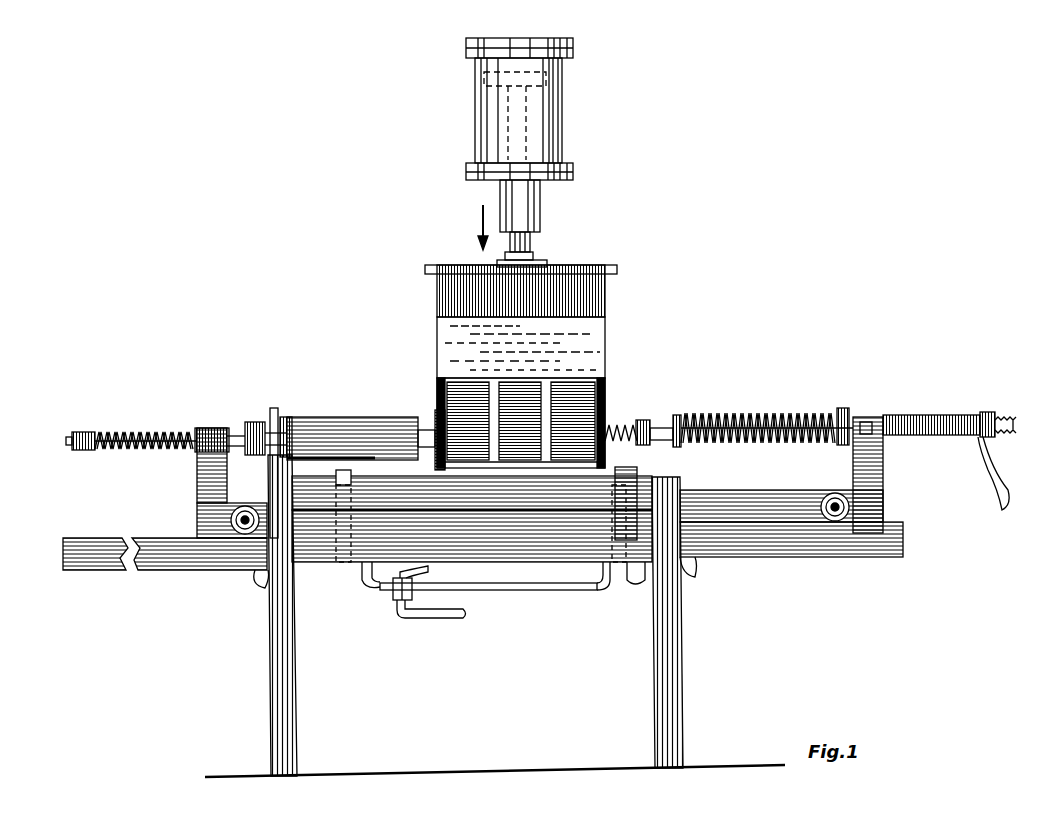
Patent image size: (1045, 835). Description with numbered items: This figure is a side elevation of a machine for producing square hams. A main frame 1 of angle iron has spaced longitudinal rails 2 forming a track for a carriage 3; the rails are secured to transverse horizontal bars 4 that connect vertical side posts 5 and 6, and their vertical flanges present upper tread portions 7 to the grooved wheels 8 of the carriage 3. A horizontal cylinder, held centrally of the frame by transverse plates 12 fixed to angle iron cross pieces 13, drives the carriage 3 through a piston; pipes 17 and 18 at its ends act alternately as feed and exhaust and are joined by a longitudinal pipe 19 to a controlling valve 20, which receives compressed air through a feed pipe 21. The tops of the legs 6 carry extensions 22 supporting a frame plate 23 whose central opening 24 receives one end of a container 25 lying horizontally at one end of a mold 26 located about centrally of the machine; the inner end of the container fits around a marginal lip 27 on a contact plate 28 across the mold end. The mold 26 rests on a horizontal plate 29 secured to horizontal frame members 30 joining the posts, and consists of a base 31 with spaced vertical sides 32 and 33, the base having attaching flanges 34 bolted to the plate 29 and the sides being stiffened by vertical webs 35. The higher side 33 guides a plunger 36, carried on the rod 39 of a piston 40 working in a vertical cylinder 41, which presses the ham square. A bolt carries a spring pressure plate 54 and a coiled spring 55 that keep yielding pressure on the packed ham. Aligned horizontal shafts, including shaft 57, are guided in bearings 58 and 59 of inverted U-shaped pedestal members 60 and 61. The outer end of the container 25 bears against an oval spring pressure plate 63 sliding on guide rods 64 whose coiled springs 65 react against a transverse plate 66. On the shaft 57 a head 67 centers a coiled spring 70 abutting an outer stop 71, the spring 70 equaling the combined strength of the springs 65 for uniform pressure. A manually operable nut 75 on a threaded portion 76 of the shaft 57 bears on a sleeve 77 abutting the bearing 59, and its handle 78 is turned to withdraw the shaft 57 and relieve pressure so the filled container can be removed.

The main frame 1 is at (700, 668).
The longitudinal rails 2 is at (180, 555).
The carriage 3 is at (200, 518).
The transverse horizontal bars 4 is at (260, 582).
The vertical side post 5 is at (652, 686).
The vertical side post 6 is at (268, 695).
The upper tread portions 7 is at (75, 538).
The grooved wheels 8 is at (245, 507).
The transverse plates 12 is at (632, 585).
The angle iron cross pieces 13 is at (630, 582).
The pipe 17 is at (362, 585).
The pipe 18 is at (597, 580).
The longitudinal pipe 19 is at (500, 592).
The controlling valve 20 is at (398, 600).
The feed pipe 21 is at (440, 618).
The extensions 22 is at (290, 478).
The frame plate 23 is at (276, 412).
The opening 24 is at (282, 430).
The container 25 is at (352, 417).
The mold 26 is at (645, 345).
The marginal lip 27 is at (425, 430).
The contact plate 28 is at (440, 410).
The horizontal plate 29 is at (440, 478).
The horizontal frame members 30 is at (352, 470).
The base 31 is at (608, 456).
The mold side 32 is at (462, 412).
The mold side 33 is at (600, 322).
The attaching flanges 34 is at (540, 432).
The vertical webs 35 is at (548, 410).
The plunger 36 is at (470, 277).
The rod 39 is at (523, 246).
The piston 40 is at (535, 82).
The vertical cylinder 41 is at (495, 120).
The spring pressure plate 54 is at (645, 420).
The coiled spring 55 is at (622, 425).
The shaft 57 is at (805, 413).
The bearing 58 is at (205, 428).
The bearing 59 is at (868, 420).
The pedestal member 60 is at (197, 468).
The pedestal member 61 is at (883, 470).
The spring pressure plate 63 is at (250, 422).
The guide rods 64 is at (104, 432).
The coiled springs 65 is at (150, 432).
The transverse plate 66 is at (80, 452).
The head 67 is at (680, 445).
The coiled spring 70 is at (760, 413).
The outer stop 71 is at (843, 408).
The manually operable nut 75 is at (988, 412).
The threaded portion 76 is at (1012, 425).
The sleeve 77 is at (925, 415).
The handle 78 is at (1000, 510).